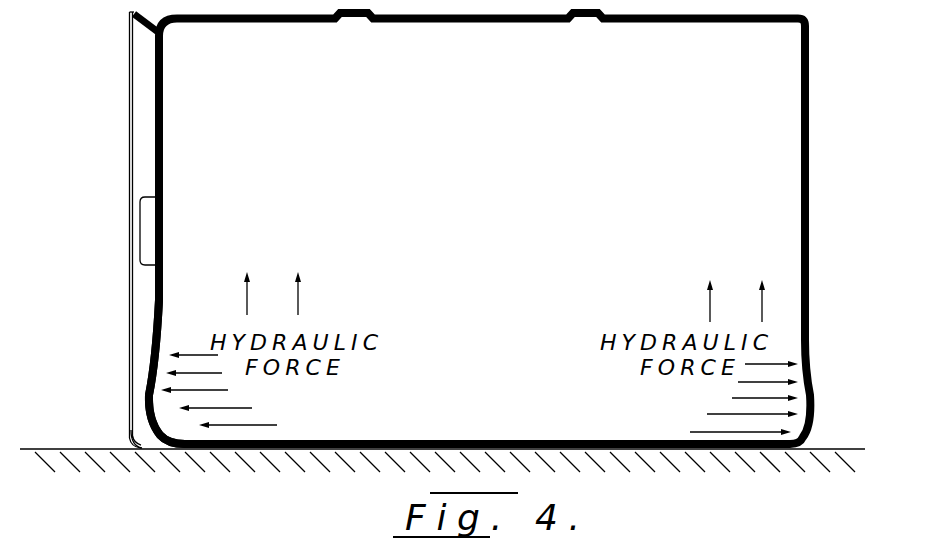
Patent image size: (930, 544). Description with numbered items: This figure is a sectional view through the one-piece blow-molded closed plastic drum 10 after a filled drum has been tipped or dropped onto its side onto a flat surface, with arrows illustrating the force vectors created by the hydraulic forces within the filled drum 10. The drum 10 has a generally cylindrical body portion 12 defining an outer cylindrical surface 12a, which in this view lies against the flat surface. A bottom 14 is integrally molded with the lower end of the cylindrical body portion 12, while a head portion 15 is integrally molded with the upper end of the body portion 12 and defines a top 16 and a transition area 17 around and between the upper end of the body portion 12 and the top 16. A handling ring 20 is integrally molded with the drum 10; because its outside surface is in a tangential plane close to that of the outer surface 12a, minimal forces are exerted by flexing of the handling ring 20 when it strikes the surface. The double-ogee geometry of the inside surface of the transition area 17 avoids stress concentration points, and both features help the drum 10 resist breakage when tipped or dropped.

The one-piece blow-molded closed plastic drum 10 is at (114, 54).
The cylindrical body portion 12 is at (658, 458).
The outer cylindrical surface 12a is at (230, 449).
The bottom 14 is at (816, 178).
The head portion 15 is at (146, 146).
The top 16 is at (156, 313).
The transition area 17 is at (186, 424).
The handling ring 20 is at (128, 434).